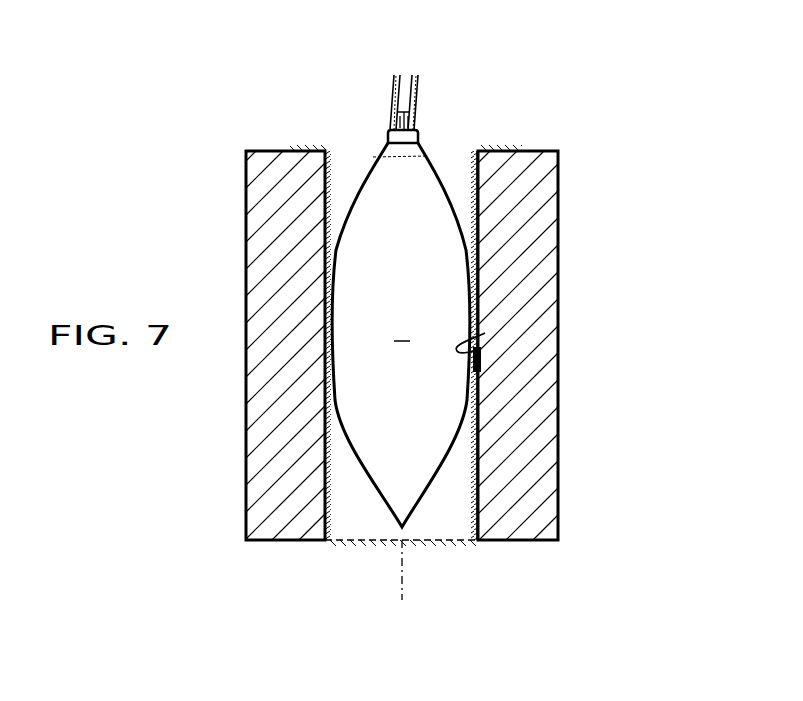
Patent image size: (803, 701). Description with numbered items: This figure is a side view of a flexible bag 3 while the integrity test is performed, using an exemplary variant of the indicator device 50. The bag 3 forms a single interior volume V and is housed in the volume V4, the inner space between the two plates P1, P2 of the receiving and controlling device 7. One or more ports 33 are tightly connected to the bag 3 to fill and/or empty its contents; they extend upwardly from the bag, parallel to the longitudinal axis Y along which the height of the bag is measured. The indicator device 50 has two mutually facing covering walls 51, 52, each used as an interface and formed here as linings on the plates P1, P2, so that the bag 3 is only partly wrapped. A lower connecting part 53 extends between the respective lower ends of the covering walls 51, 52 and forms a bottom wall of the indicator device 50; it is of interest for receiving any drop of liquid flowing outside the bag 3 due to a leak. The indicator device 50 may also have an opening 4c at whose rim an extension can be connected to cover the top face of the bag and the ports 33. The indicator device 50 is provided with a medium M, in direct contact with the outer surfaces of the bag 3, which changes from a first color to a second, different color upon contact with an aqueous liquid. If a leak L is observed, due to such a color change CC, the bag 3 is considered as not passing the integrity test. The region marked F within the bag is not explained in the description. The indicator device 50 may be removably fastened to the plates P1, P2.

The indicator device 50 is at (268, 127).
The flexible bag 3 is at (352, 137).
The ports 33 is at (418, 90).
The opening 4c is at (477, 152).
The plate P1 is at (246, 213).
The plate P2 is at (559, 212).
The interior volume V is at (368, 293).
The leak L is at (485, 333).
The filling F is at (402, 327).
The color change CC is at (481, 364).
The covering wall 51 is at (326, 452).
The covering wall 52 is at (479, 465).
The medium M is at (338, 488).
The receiving and controlling device 7 is at (254, 560).
The volume V4 is at (366, 494).
The connecting part 53 is at (390, 545).
The longitudinal axis Y is at (402, 588).